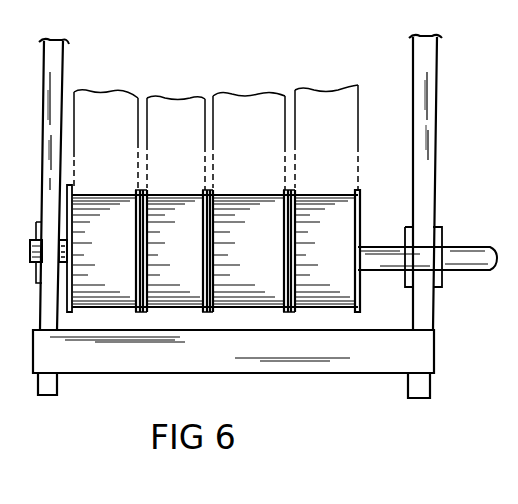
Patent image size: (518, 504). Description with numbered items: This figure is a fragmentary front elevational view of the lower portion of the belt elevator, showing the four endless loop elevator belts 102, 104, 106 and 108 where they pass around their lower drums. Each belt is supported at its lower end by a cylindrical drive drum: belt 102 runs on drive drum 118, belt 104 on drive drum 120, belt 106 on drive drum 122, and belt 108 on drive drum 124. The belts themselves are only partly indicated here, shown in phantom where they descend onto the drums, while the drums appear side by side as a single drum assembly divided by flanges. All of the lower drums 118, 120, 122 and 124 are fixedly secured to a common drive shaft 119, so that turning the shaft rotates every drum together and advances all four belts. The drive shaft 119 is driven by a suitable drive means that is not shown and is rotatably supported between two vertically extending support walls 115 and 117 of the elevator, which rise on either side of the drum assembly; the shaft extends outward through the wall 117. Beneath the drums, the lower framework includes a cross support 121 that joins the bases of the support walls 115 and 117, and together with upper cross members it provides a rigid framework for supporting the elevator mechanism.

The endless loop elevator belt 102 is at (325, 100).
The endless loop elevator belt 104 is at (247, 105).
The endless loop elevator belt 106 is at (168, 105).
The endless loop elevator belt 108 is at (97, 100).
The support wall 115 is at (50, 70).
The support wall 117 is at (428, 62).
The cylindrical drive drum 118 is at (357, 190).
The drive shaft 119 is at (466, 258).
The cylindrical drive drum 120 is at (287, 190).
The cross support 121 is at (333, 364).
The cylindrical drive drum 122 is at (206, 190).
The cylindrical drive drum 124 is at (138, 190).